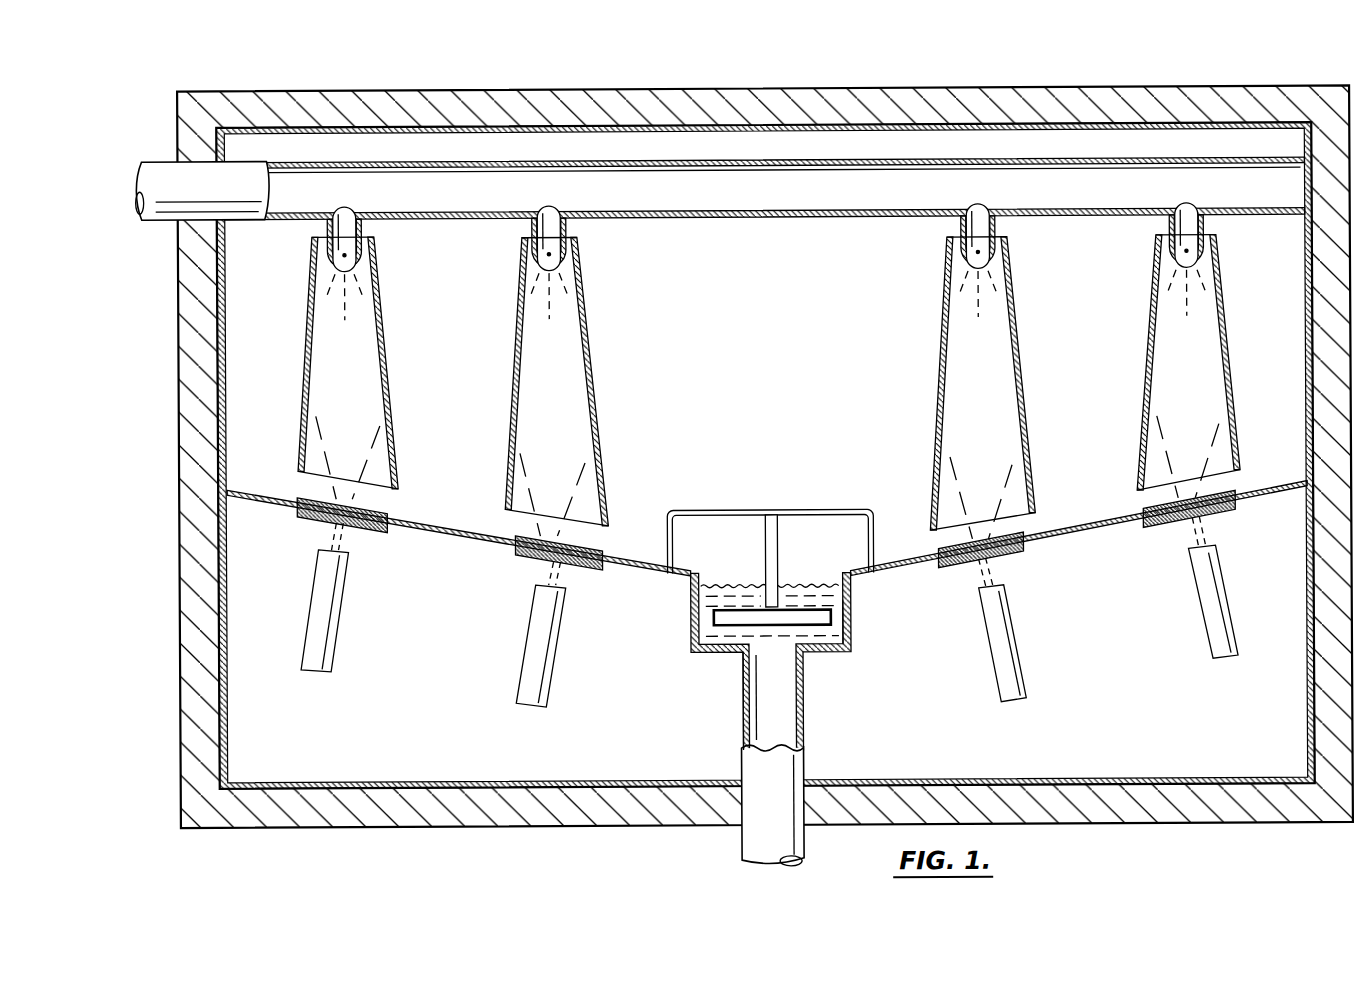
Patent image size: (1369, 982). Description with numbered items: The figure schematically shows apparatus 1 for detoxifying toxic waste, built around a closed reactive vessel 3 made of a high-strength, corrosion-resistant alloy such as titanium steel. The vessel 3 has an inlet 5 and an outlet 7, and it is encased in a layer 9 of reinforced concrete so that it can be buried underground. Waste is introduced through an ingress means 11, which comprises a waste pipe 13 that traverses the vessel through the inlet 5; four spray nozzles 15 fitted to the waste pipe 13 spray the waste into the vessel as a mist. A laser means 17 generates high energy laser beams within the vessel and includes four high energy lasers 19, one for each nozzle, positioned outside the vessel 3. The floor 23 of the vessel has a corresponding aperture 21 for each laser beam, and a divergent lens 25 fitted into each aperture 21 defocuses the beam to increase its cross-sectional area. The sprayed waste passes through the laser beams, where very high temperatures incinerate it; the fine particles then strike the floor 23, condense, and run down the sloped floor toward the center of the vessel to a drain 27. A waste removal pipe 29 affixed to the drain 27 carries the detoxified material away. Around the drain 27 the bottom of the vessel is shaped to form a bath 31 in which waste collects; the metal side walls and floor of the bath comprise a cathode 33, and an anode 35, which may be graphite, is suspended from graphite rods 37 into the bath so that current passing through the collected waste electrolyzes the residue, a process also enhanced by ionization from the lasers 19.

The apparatus 1 is at (148, 557).
The reactive vessel 3 is at (794, 352).
The inlet 5 is at (147, 221).
The outlet 7 is at (698, 703).
The layer of reinforced concrete 9 is at (258, 826).
The ingress means 11 is at (708, 154).
The waste pipe 13 is at (664, 218).
The spray nozzle 15 is at (366, 226).
The laser means 17 is at (340, 718).
The high energy laser 19 is at (324, 636).
The aperture 21 is at (362, 530).
The floor 23 is at (622, 560).
The divergent lens 25 is at (312, 520).
The drain 27 is at (778, 655).
The waste removal pipe 29 is at (786, 770).
The basin 31 is at (708, 610).
The cathode 33 is at (850, 645).
The heating element 35 is at (834, 617).
The rods 37 is at (818, 510).